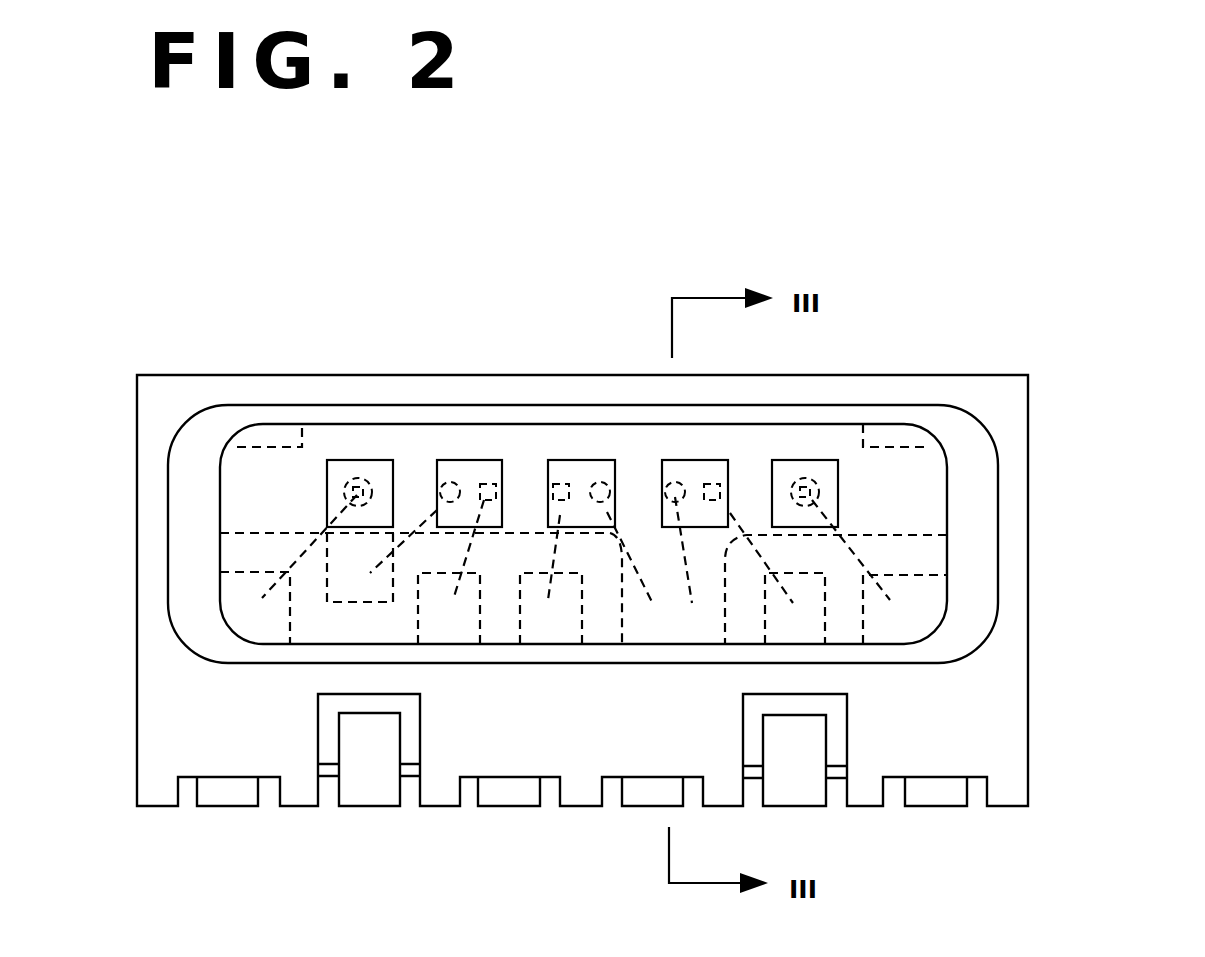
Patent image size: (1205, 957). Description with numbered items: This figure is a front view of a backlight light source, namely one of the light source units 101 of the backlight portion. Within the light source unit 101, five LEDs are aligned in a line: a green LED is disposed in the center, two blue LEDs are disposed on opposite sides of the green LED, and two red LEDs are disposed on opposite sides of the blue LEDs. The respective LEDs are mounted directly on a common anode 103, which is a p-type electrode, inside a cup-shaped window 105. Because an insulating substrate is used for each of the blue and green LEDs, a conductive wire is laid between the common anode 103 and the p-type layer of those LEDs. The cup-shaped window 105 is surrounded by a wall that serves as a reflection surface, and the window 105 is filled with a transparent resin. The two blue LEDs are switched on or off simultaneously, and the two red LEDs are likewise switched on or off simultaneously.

The light source unit 101 is at (206, 270).
The common anode 103 is at (910, 485).
The cup-shaped window 105 is at (973, 617).